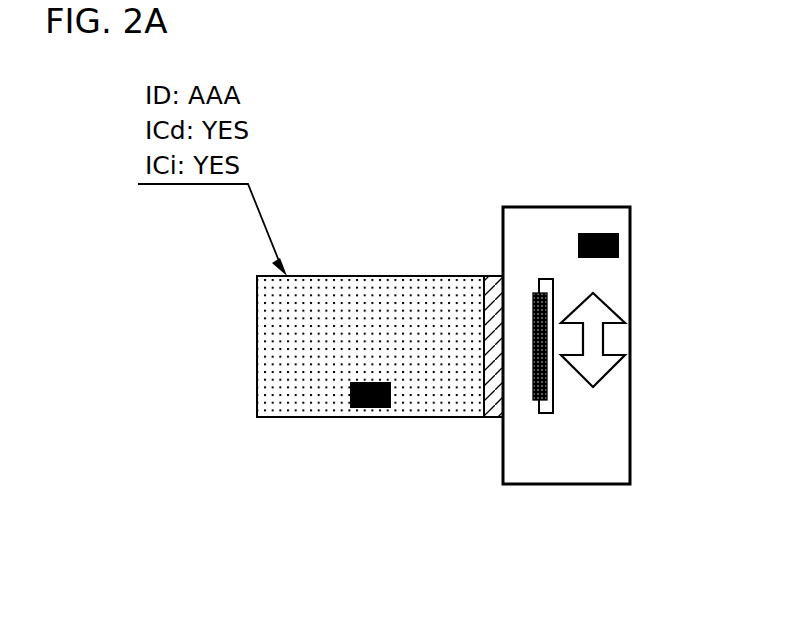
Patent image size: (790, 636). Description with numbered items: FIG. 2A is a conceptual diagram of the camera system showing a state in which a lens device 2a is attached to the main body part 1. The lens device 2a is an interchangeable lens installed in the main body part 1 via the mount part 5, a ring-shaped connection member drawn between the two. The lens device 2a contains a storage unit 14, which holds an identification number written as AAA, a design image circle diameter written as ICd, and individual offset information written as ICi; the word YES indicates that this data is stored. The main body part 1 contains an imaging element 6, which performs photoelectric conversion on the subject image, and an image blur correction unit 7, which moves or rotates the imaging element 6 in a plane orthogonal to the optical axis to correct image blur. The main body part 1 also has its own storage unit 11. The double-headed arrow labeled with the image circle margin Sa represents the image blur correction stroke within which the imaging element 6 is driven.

The main body part 1 is at (620, 484).
The lens device 2a is at (355, 275).
The mount part 5 is at (495, 276).
The imaging element 6 is at (533, 367).
The image blur correction unit 7 is at (546, 268).
The storage unit 11 is at (600, 236).
The storage unit 14 is at (370, 408).
The image circle margin Sa is at (605, 338).